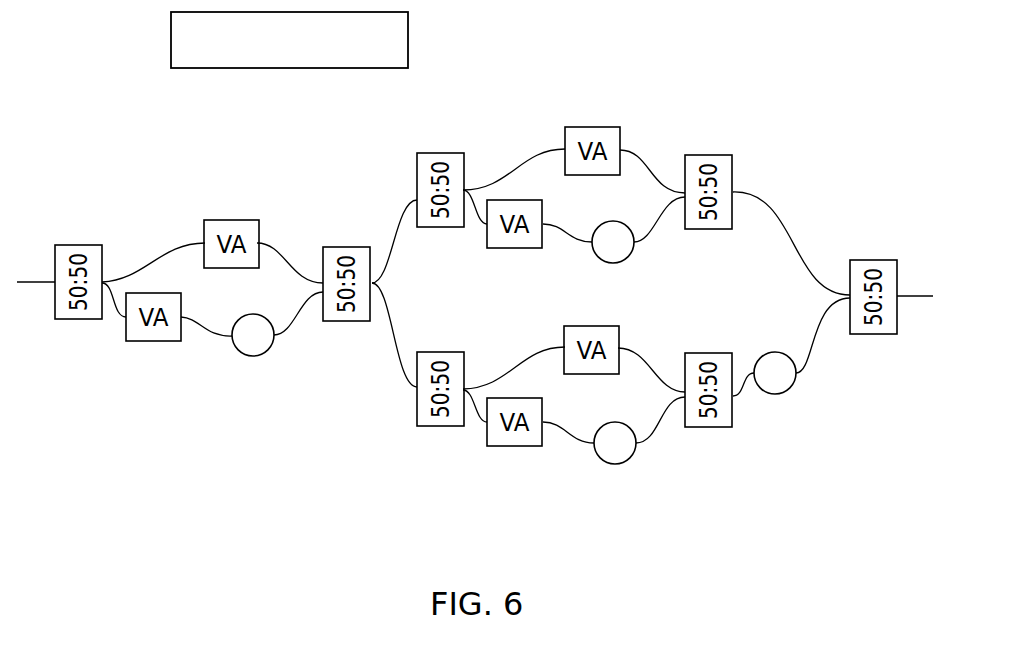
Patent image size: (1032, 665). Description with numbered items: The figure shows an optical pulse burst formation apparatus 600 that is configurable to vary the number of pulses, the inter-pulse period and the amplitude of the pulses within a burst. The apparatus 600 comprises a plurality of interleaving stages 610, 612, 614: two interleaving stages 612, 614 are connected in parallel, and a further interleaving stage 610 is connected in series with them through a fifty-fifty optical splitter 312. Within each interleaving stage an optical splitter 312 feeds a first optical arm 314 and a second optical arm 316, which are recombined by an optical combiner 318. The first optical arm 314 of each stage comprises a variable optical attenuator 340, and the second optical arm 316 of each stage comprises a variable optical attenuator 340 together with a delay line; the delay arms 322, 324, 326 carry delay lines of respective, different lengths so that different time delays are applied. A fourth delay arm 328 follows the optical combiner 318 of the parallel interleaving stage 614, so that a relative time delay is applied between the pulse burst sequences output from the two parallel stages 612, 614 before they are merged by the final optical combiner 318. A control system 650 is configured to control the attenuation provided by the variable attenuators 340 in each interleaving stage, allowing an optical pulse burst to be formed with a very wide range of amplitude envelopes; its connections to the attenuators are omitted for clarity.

The optical pulse burst formation apparatus 600 is at (240, 472).
The interleaving stage 610 is at (160, 180).
The interleaving stage 612 is at (502, 106).
The interleaving stage 614 is at (623, 482).
The control system 650 is at (289, 40).
The optical splitter 312 is at (86, 314).
The optical combiner 318 is at (720, 160).
The variable optical attenuator 340 is at (235, 225).
The first optical arm 314 is at (143, 262).
The second optical arm 316 is at (283, 347).
The delay arm 322 is at (218, 338).
The delay arm 324 is at (576, 245).
The delay arm 326 is at (578, 447).
The delay arm 328 is at (810, 367).